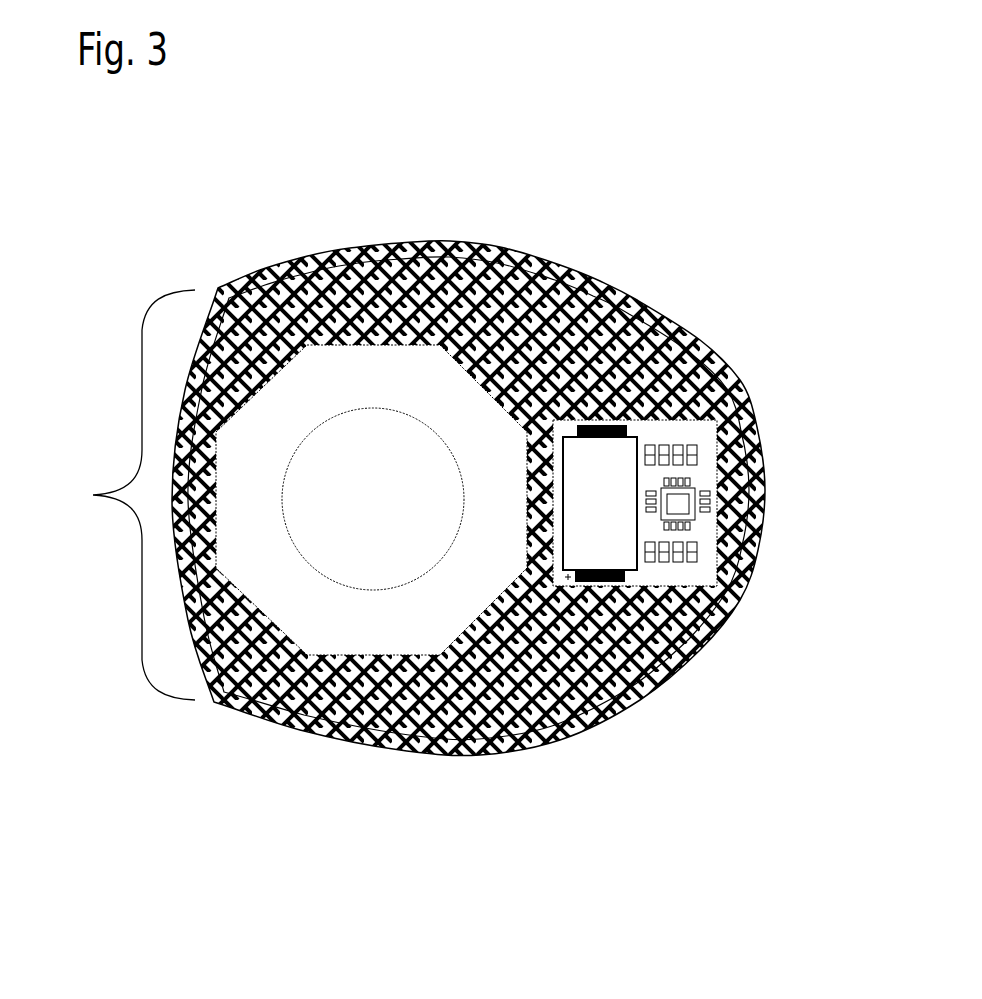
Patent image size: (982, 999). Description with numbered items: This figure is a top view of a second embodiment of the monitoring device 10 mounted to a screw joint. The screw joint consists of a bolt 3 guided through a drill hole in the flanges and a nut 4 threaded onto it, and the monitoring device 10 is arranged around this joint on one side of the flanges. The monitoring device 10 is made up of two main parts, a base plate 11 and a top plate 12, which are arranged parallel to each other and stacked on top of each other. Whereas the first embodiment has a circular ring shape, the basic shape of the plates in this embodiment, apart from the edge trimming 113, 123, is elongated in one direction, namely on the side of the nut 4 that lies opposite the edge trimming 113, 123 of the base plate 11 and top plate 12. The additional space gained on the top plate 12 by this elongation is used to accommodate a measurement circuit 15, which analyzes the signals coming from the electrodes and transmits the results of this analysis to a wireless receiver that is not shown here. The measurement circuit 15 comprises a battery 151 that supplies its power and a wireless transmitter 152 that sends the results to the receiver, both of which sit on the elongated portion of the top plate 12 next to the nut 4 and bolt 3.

The monitoring device 10 is at (707, 258).
The base plate 11 is at (594, 293).
The top plate 12 is at (562, 640).
The nut 4 is at (292, 403).
The bolt 3 is at (358, 537).
The measurement circuit 15 is at (744, 382).
The battery 151 is at (626, 552).
The wireless transmitter 152 is at (675, 503).
The edge trimming 113 is at (105, 495).
The edge trimming 123 is at (105, 495).